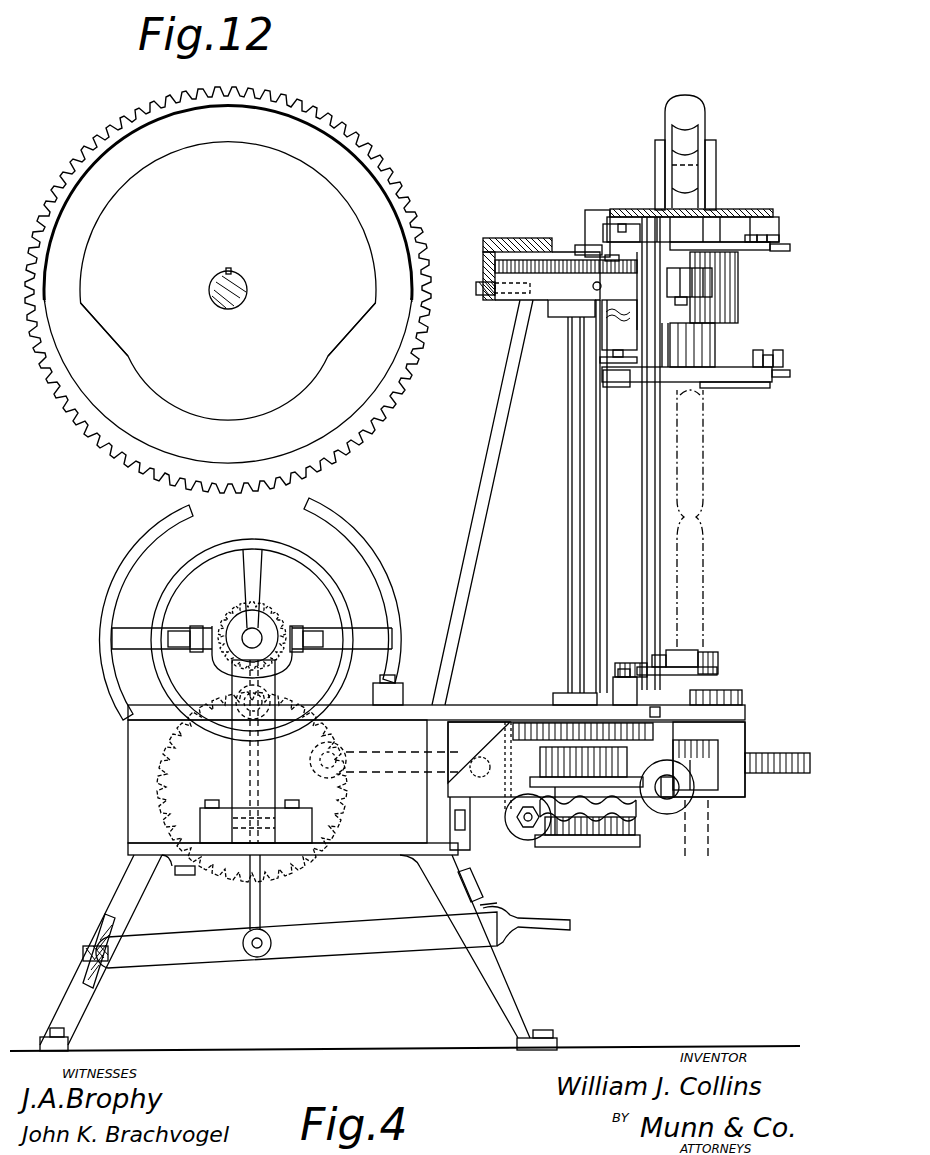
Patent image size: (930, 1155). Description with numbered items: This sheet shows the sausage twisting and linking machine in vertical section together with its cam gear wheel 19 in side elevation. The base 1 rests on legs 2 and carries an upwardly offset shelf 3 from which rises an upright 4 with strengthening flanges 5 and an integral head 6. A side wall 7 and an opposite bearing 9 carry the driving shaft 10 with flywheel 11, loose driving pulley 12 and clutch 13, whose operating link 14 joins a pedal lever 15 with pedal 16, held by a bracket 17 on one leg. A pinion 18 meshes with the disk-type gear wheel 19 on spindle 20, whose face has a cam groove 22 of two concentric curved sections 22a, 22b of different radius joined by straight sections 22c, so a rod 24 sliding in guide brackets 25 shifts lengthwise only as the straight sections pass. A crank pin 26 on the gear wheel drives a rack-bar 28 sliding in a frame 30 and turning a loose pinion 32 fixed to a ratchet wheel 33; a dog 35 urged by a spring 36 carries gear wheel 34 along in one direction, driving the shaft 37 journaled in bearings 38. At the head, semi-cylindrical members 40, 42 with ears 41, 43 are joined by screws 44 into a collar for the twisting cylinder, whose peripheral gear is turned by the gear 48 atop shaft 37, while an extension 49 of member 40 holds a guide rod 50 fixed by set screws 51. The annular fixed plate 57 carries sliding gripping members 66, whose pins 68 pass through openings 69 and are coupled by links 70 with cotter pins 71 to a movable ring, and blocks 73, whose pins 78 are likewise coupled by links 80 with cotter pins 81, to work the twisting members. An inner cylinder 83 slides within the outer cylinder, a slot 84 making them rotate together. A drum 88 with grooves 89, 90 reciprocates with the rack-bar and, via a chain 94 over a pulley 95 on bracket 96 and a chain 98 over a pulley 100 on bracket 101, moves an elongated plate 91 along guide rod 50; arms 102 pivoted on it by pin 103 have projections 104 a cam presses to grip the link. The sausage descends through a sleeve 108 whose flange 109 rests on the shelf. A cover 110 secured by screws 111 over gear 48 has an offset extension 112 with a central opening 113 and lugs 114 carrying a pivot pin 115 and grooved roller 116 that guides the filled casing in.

In FIG. 4, the machine base 1 is at (128, 849).
In FIG. 4, the legs 2 is at (136, 902).
In FIG. 4, the shelf 3 is at (745, 700).
In FIG. 4, the upright 4 is at (495, 419).
In FIG. 4, the strengthening flanges 5 is at (474, 512).
In FIG. 4, the head 6 is at (528, 292).
In FIG. 4, the side wall 7 is at (146, 712).
In FIG. 4, the bearing 9 is at (264, 630).
In FIG. 4, the driving shaft 10 is at (232, 631).
In FIG. 4, the flywheel 11 is at (358, 548).
In FIG. 4, the driving pulley 12 is at (292, 550).
In FIG. 4, the clutch 13 is at (292, 628).
In FIG. 4, the operating link 14 is at (248, 752).
In FIG. 4, the pedal lever 15 is at (346, 940).
In FIG. 4, the pedal 16 is at (572, 924).
In FIG. 4, the bracket 17 is at (490, 888).
In FIG. 4, the pinion 18 is at (236, 615).
In FIG. 12, the gear wheel 19 is at (320, 212).
In FIG. 4, the gear wheel 19 is at (300, 876).
In FIG. 12, the spindle 20 is at (247, 290).
In FIG. 12, the cam groove 22 is at (228, 296).
In FIG. 12, the curved groove section 22a is at (232, 120).
In FIG. 12, the curved groove section 22b is at (302, 425).
In FIG. 12, the straight groove sections 22c is at (95, 334).
In FIG. 4, the rod 24 is at (378, 690).
In FIG. 4, the guide brackets 25 is at (396, 676).
In FIG. 4, the crank pin 26 is at (312, 758).
In FIG. 4, the rack-bar 28 is at (770, 753).
In FIG. 4, the frame 30 is at (735, 722).
In FIG. 4, the loose pinion 32 is at (626, 806).
In FIG. 4, the ratchet wheel 33 is at (580, 735).
In FIG. 4, the gear wheel 34 is at (540, 728).
In FIG. 4, the dog 35 is at (560, 732).
In FIG. 4, the spring 36 is at (492, 762).
In FIG. 4, the shaft 37 is at (568, 502).
In FIG. 4, the bearings 38 is at (560, 318).
In FIG. 4, the semi-cylindrical member 40 is at (660, 220).
In FIG. 4, the ears 41 is at (688, 302).
In FIG. 4, the semi-cylindrical member 42 is at (738, 268).
In FIG. 4, the ears 43 is at (700, 222).
In FIG. 4, the screws or bolts 44 is at (714, 284).
In FIG. 4, the gear 48 is at (534, 260).
In FIG. 4, the extension 49 is at (650, 288).
In FIG. 4, the guide rod 50 is at (668, 488).
In FIG. 4, the set screws 51 is at (648, 713).
In FIG. 4, the annular fixed plate 57 is at (662, 232).
In FIG. 4, the gripping members 66 is at (760, 242).
In FIG. 4, the pins 68 is at (770, 240).
In FIG. 4, the openings 69 is at (762, 235).
In FIG. 4, the links 70 is at (752, 235).
In FIG. 4, the cotter pins 71 is at (772, 250).
In FIG. 4, the blocks 73 is at (625, 226).
In FIG. 4, the pins 78 is at (596, 248).
In FIG. 4, the links 80 is at (582, 266).
In FIG. 4, the cotter pins 81 is at (614, 352).
In FIG. 4, the cylinder 83 is at (690, 382).
In FIG. 4, the slot 84 is at (700, 345).
In FIG. 4, the drum 88 is at (615, 838).
In FIG. 4, the groove 89 is at (578, 840).
In FIG. 4, the groove 90 is at (596, 847).
In FIG. 4, the elongated plate 91 is at (716, 660).
In FIG. 4, the flexible member 94 is at (700, 772).
In FIG. 4, the grooved pulley 95 is at (678, 808).
In FIG. 4, the bracket 96 is at (702, 797).
In FIG. 4, the chain 98 is at (602, 336).
In FIG. 4, the grooved pulley 100 is at (520, 838).
In FIG. 4, the bracket 101 is at (472, 832).
In FIG. 4, the arms 102 is at (682, 650).
In FIG. 4, the pivot pin 103 is at (660, 655).
In FIG. 4, the projections 104 is at (615, 668).
In FIG. 4, the sleeve 108 is at (711, 765).
In FIG. 4, the flange 109 is at (716, 690).
In FIG. 4, the cover 110 is at (506, 240).
In FIG. 4, the screws or bolts 111 is at (477, 290).
In FIG. 4, the extension 112 is at (700, 209).
In FIG. 4, the central opening 113 is at (665, 200).
In FIG. 4, the lugs 114 is at (660, 140).
In FIG. 4, the pivot pin 115 is at (708, 160).
In FIG. 4, the grooved roller 116 is at (690, 118).